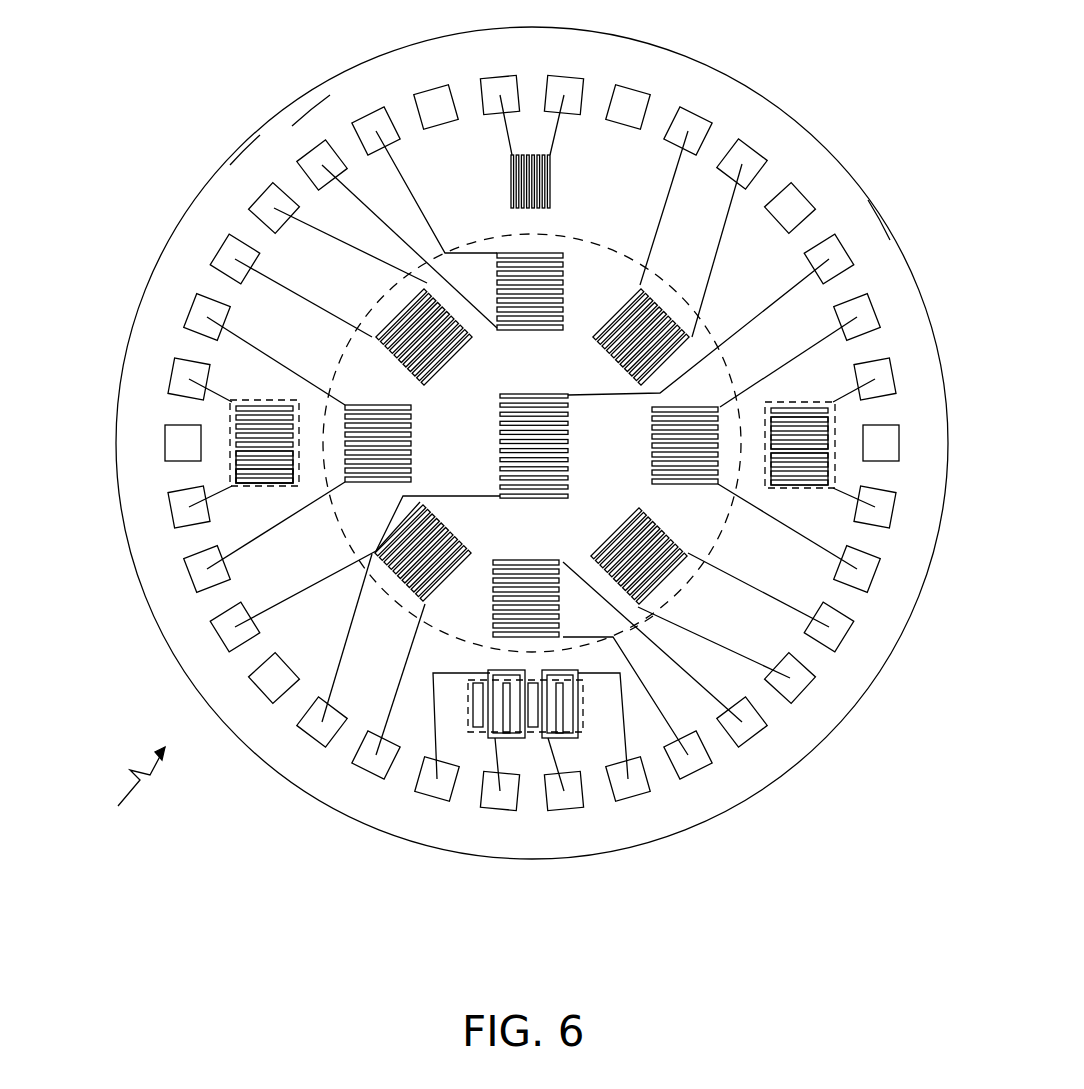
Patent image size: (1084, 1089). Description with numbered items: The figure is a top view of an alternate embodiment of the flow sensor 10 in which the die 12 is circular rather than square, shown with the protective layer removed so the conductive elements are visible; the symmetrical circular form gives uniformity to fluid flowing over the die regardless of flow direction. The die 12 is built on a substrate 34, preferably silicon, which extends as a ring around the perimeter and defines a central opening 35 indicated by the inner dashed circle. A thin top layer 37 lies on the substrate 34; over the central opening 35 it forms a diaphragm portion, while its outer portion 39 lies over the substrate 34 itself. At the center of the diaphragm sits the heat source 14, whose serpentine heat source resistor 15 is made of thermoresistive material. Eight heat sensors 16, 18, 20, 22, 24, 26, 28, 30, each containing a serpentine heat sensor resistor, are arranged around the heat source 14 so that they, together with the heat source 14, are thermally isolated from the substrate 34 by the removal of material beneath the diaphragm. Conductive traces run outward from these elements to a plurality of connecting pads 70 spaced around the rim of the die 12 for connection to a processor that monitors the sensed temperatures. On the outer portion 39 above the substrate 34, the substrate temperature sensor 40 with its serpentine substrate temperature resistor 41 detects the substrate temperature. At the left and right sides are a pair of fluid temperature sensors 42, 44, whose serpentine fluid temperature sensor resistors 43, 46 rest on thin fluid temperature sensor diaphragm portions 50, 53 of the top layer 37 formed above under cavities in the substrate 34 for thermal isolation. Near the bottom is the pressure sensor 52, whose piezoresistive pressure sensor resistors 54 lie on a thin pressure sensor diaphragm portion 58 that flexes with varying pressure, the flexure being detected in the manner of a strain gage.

The flow sensor 10 is at (129, 794).
The die 12 is at (532, 434).
The heat source 14 is at (567, 432).
The heat source resistor 15 is at (540, 483).
The heat sensor 16 is at (436, 552).
The heat sensor 18 is at (526, 570).
The heat sensor 20 is at (619, 555).
The heat sensor 22 is at (655, 445).
The heat sensor 24 is at (618, 337).
The heat sensor 26 is at (530, 323).
The heat sensor 28 is at (426, 351).
The heat sensor 30 is at (413, 443).
The substrate 34 is at (278, 102).
The central opening 35 is at (532, 424).
The top layer 37 is at (443, 402).
The outer portion 39 is at (893, 207).
The substrate temperature sensor 40 is at (563, 177).
The substrate temperature resistor 41 is at (532, 443).
The fluid temperature sensor 42 is at (840, 474).
The fluid temperature sensor resistor 43 is at (839, 425).
The fluid temperature sensor 44 is at (221, 472).
The fluid temperature sensor resistor 46 is at (225, 442).
The fluid temperature sensor diaphragm portion 50 is at (800, 426).
The pressure sensor 52 is at (484, 787).
The fluid temperature sensor diaphragm portion 53 is at (256, 507).
The pressure sensor resistors 54 is at (512, 724).
The pressure sensor diaphragm portion 58 is at (571, 725).
The connecting pads 70 is at (546, 443).